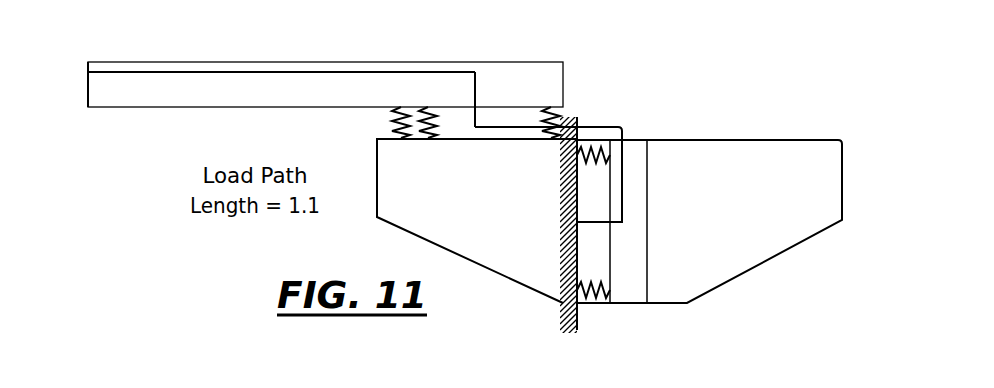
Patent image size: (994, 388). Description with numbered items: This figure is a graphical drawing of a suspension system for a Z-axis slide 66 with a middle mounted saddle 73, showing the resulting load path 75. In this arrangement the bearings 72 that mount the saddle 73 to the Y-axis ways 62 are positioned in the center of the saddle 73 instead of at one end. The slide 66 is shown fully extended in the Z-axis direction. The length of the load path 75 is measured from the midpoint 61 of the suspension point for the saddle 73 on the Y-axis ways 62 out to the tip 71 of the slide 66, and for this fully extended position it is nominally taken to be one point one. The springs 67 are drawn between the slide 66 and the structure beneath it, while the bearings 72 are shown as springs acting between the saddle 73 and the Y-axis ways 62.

The midpoint of the suspension point 61 is at (573, 229).
The Y-axis ways 62 is at (577, 250).
The Z-axis slide 66 is at (286, 56).
The springs / compliant elements 67 is at (426, 119).
The tip of the slide 71 is at (88, 84).
The bearings 72 is at (592, 157).
The saddle 73 is at (755, 238).
The load path 75 is at (388, 71).